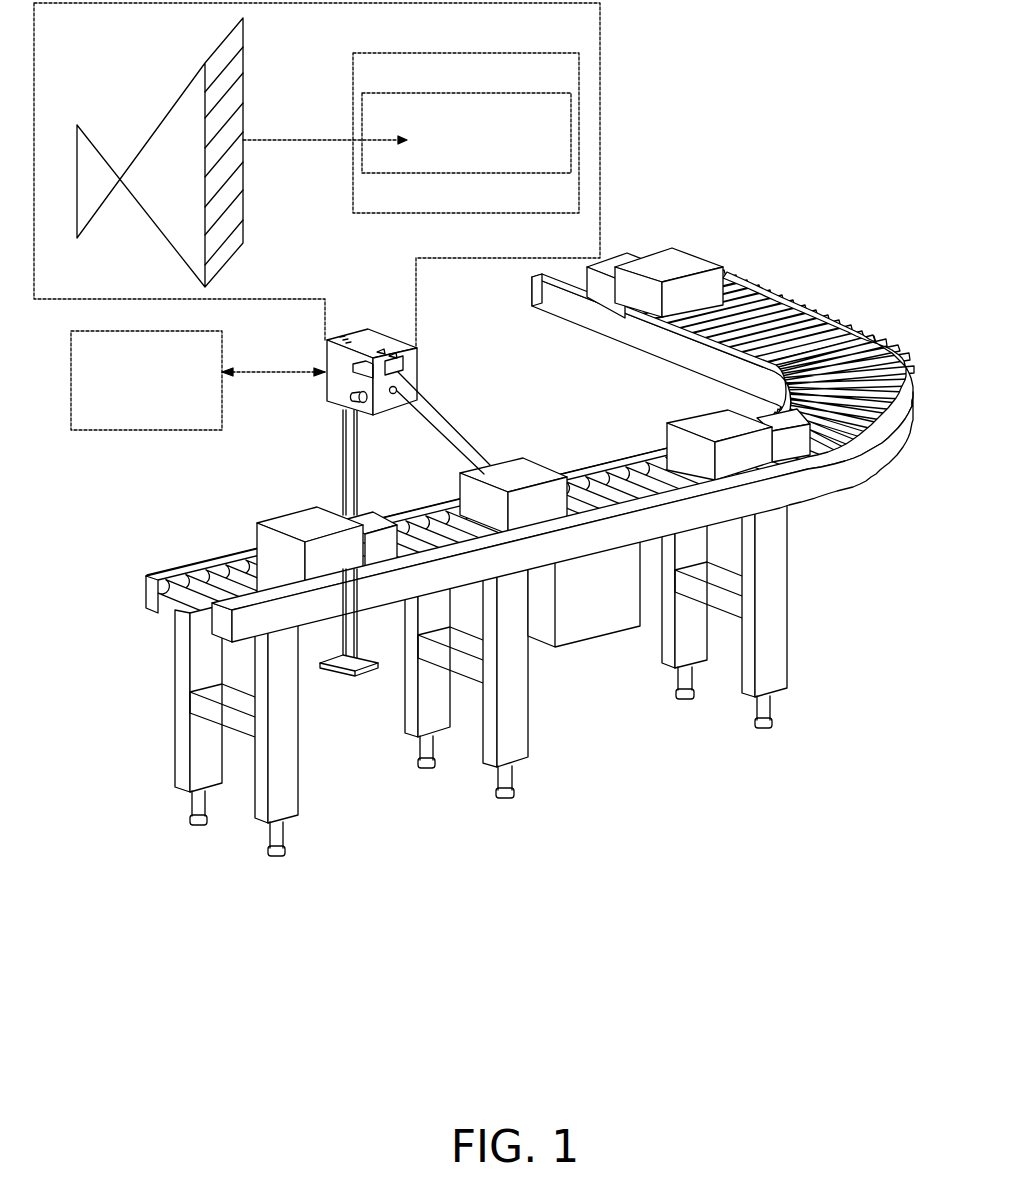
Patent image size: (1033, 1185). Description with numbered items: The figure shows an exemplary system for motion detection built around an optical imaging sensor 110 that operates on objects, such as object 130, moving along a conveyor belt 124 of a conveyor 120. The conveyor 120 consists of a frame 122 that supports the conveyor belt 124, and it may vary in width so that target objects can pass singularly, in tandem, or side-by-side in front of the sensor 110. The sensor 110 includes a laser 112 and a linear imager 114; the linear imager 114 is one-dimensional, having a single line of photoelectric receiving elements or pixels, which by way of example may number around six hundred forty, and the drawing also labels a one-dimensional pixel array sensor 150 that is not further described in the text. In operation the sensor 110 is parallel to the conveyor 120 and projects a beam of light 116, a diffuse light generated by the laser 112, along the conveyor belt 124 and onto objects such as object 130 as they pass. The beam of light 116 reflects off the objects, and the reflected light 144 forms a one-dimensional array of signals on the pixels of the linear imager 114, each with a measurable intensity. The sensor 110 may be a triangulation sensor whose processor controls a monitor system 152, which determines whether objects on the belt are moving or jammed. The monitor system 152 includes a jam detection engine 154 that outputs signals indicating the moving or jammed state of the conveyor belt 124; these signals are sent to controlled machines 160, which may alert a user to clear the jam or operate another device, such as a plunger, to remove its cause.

The sensor 110 is at (335, 497).
The laser 112 is at (357, 400).
The linear imager 114 is at (353, 368).
The beam of light 116 is at (440, 427).
The conveyor 120 is at (515, 516).
The frame 122 is at (877, 347).
The conveyor belt 124 is at (207, 600).
The object 130 is at (513, 496).
The reflected light 144 is at (448, 410).
The 1-D pixel array sensor 150 is at (242, 88).
The monitor system 152 is at (466, 133).
The jam detection engine 154 is at (466, 133).
The controlled machines 160 is at (146, 380).